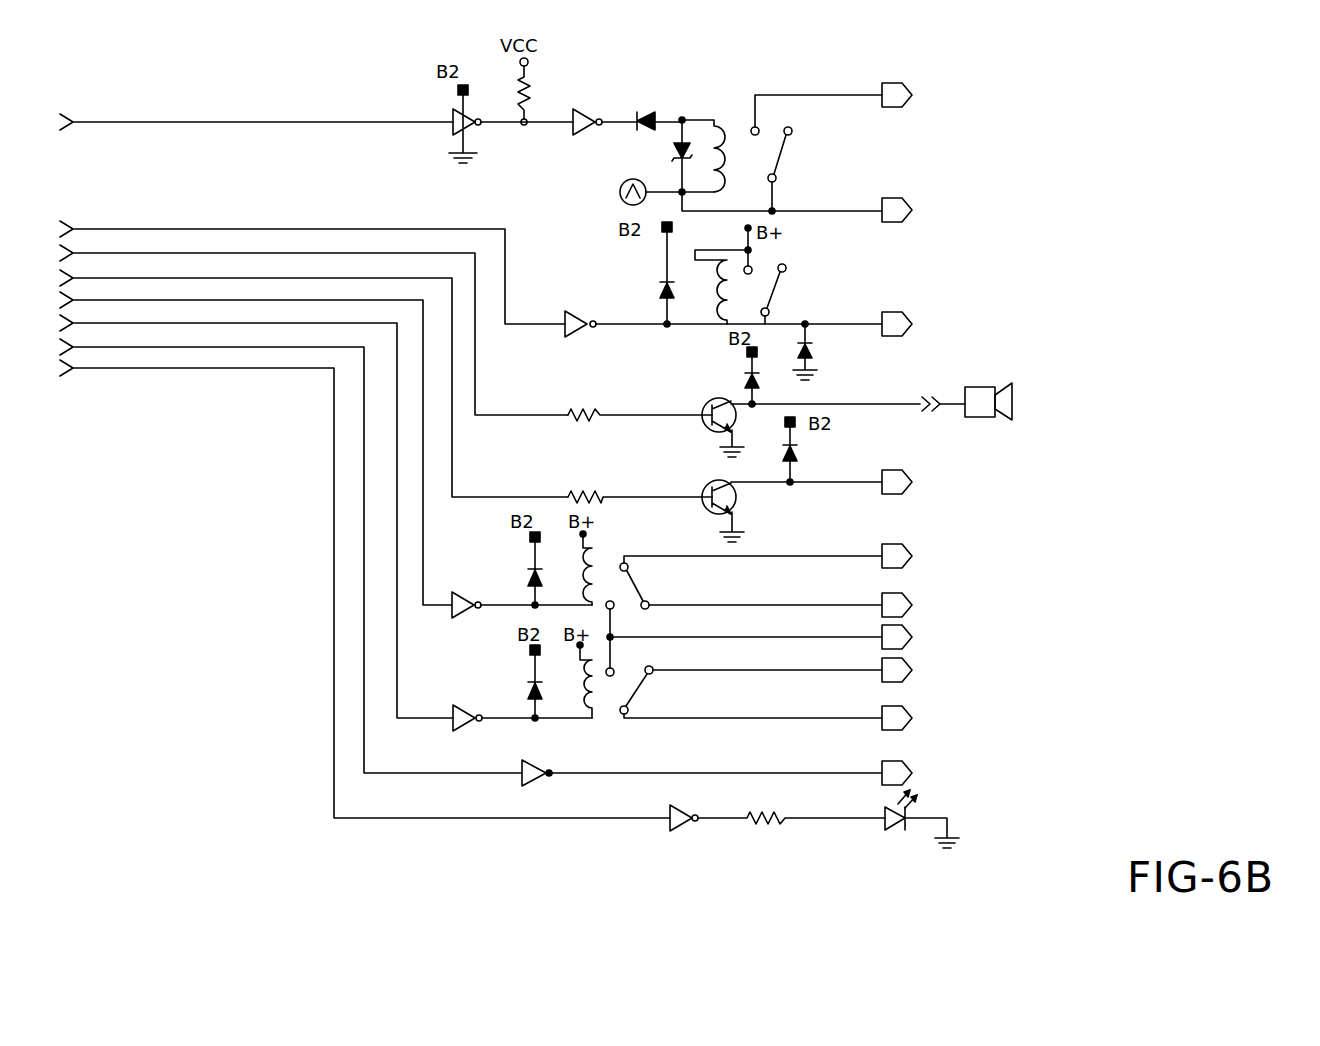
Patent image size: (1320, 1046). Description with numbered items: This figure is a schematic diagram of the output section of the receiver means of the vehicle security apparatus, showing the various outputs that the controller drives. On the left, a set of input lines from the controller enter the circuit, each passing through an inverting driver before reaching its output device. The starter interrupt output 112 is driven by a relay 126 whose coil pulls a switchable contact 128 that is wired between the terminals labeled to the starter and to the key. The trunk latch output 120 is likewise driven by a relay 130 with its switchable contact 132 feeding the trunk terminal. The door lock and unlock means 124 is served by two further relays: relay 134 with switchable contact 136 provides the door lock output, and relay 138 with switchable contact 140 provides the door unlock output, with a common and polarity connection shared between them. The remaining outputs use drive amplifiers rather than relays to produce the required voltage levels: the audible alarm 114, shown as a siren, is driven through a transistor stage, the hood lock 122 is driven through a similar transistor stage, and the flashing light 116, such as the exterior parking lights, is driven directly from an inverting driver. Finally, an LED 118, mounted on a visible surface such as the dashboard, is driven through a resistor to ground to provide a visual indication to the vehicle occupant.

The starter interrupt output 112 is at (1008, 126).
The audible alarm 114 is at (1015, 402).
The flashing light 116 is at (1040, 771).
The LED 118 is at (948, 828).
The trunk latch 120 is at (1030, 282).
The hood lock 122 is at (1050, 468).
The door lock and unlock means 124 is at (1108, 540).
The relay 126 is at (728, 147).
The switchable contact 128 is at (781, 157).
The relay 130 is at (728, 298).
The switchable contact 132 is at (772, 291).
The relay 134 is at (593, 567).
The switchable contact 136 is at (638, 588).
The relay 138 is at (596, 702).
The switchable contact 140 is at (636, 690).